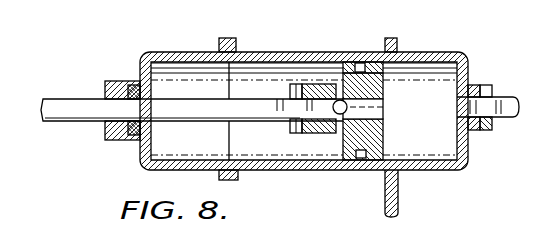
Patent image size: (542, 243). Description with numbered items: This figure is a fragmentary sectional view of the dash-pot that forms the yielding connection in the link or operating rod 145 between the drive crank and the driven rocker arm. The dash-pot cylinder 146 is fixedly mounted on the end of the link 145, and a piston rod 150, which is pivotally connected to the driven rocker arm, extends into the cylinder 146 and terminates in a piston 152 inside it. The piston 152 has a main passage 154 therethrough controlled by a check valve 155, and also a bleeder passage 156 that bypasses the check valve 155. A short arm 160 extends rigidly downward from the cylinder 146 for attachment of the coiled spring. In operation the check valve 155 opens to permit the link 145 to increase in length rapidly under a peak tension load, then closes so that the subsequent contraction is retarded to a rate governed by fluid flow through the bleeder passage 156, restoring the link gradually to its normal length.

The link or operating rod 145 is at (507, 97).
The dash-pot cylinder 146 is at (293, 46).
The piston rod 150 is at (63, 107).
The piston 152 is at (355, 141).
The main passage 154 is at (384, 107).
The check valve 155 is at (337, 113).
The bleeder passage 156 is at (350, 75).
The short arm 160 is at (399, 200).